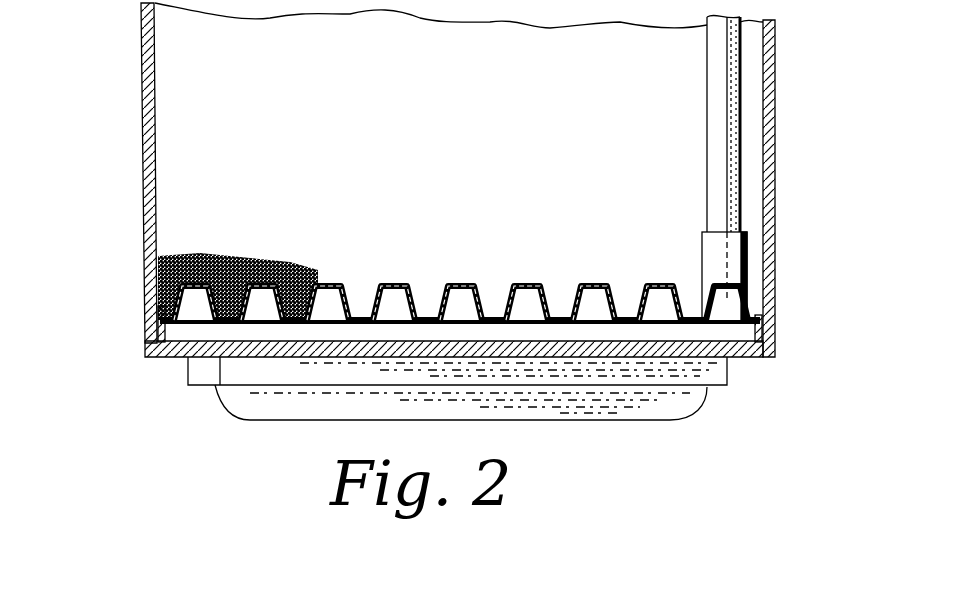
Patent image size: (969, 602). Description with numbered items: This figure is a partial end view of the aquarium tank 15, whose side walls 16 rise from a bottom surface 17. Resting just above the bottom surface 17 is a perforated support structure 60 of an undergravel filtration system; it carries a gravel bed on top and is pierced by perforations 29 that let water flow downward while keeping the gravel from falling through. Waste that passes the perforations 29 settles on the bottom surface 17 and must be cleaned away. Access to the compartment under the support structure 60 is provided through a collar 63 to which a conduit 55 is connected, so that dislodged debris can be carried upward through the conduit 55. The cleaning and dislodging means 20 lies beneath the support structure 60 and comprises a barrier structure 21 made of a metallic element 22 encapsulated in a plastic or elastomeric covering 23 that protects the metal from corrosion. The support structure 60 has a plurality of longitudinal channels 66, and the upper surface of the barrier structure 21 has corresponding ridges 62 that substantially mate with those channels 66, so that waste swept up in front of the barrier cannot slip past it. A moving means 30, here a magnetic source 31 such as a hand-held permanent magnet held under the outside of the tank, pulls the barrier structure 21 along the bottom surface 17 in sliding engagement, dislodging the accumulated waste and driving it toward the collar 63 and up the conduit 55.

The tank 15 is at (141, 63).
The side walls 16 is at (145, 162).
The bottom surface 17 is at (776, 357).
The cleaning and dislodging means 20 is at (183, 337).
The barrier structure 21 is at (447, 305).
The metallic element 22 is at (212, 340).
The plastic or elastomeric covering 23 is at (283, 268).
The perforations 29 is at (396, 286).
The moving means 30 is at (675, 432).
The magnetic source 31 is at (700, 378).
The conduit 55 is at (740, 72).
The perforated support structure 60 is at (462, 270).
The ridges 62 is at (226, 288).
The collar 63 is at (745, 240).
The longitudinal channels 66 is at (350, 292).